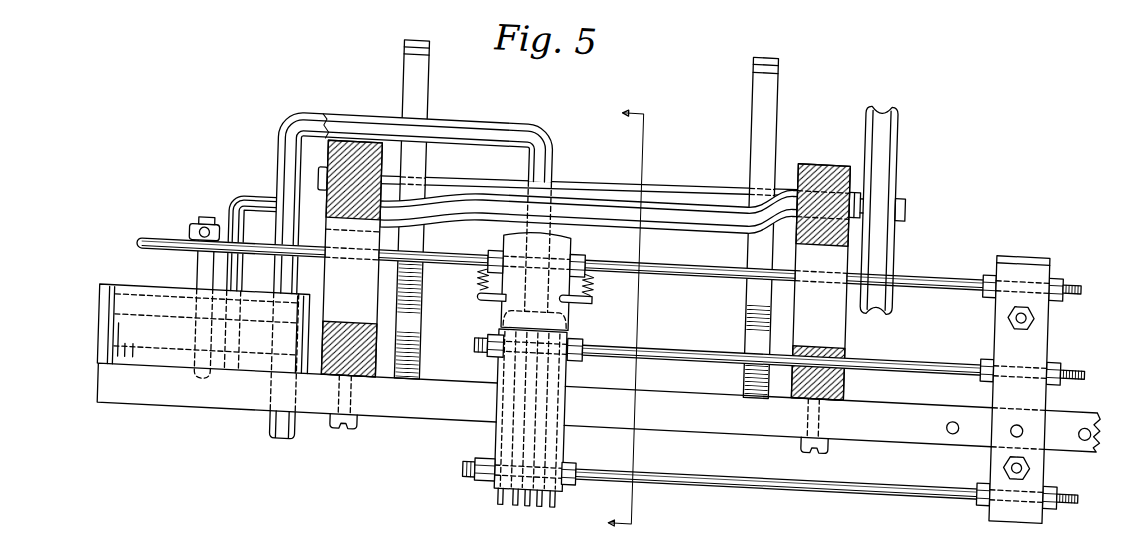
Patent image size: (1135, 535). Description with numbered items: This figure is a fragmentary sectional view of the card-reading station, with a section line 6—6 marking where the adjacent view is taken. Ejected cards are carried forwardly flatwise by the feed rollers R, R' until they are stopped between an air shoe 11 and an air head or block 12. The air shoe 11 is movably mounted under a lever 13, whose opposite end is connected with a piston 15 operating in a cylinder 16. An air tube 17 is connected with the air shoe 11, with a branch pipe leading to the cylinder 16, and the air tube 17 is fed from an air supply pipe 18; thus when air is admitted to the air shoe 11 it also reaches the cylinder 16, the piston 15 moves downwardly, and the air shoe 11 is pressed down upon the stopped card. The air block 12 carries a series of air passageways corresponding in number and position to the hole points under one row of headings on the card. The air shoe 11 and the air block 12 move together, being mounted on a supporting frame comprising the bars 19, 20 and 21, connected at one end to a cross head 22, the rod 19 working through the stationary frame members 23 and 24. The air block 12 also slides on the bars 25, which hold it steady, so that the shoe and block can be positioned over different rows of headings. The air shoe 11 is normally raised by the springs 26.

The section line 6— 6 is at (615, 317).
The air shoe 11 is at (509, 308).
The air head or block 12 is at (499, 436).
The lever 13 is at (669, 226).
The piston 15 is at (208, 287).
The cylinder 16 is at (104, 348).
The air tube 17 is at (248, 216).
The air supply pipe 18 is at (273, 449).
The bar 19 is at (919, 262).
The bar 20 is at (895, 346).
The bar 21 is at (863, 470).
The cross head 22 is at (1041, 322).
The stationary frame member 23 is at (351, 285).
The stationary frame member 24 is at (820, 309).
The bar 25 is at (730, 417).
The spring 26 is at (476, 287).
The feed roller R is at (586, 219).
The feed roller R' is at (583, 330).